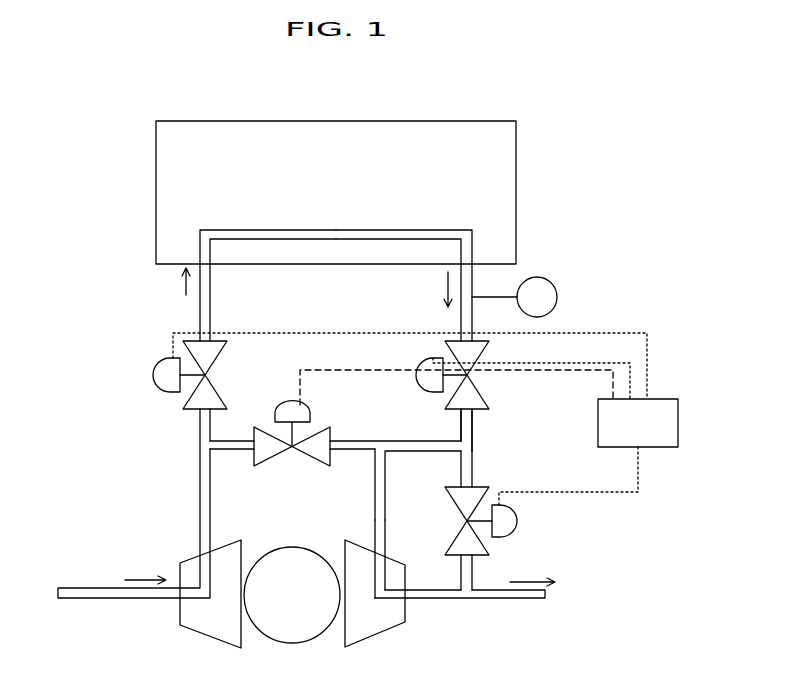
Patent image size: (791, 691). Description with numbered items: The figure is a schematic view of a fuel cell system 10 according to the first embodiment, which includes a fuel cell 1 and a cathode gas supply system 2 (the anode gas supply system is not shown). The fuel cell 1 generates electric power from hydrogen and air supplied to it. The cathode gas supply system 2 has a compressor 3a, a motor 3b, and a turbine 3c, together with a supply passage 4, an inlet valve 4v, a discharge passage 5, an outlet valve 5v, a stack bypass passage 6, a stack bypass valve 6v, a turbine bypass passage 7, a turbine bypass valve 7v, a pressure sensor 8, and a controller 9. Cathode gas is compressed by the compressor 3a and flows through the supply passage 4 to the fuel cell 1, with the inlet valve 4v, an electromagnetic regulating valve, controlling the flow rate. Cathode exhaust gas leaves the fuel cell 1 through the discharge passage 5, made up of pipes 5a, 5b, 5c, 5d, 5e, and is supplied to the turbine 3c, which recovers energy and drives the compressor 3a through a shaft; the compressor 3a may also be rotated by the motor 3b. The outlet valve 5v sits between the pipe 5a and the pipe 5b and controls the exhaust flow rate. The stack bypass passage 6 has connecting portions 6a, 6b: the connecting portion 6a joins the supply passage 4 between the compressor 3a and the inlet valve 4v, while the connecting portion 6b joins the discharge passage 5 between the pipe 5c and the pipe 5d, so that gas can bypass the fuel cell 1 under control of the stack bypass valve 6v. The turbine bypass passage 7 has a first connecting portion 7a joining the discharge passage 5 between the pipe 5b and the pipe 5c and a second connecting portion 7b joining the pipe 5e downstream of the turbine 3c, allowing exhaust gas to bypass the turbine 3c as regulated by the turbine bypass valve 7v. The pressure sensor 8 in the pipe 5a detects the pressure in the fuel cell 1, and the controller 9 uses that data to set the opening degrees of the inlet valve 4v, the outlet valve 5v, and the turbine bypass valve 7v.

The fuel cell system 10 is at (124, 153).
The fuel cell 1 is at (518, 200).
The cathode gas supply system 2 is at (100, 325).
The compressor 3a is at (188, 632).
The motor 3b is at (292, 547).
The turbine 3c is at (393, 628).
The supply passage 4 is at (197, 507).
The inlet valve 4v is at (158, 371).
The discharge passage 5 is at (474, 431).
The pipe 5a is at (467, 318).
The pipe 5b is at (462, 421).
The pipe 5c is at (425, 443).
The pipe 5d is at (386, 521).
The pipe 5e is at (517, 600).
The outlet valve 5v is at (489, 402).
The stack bypass passage 6 is at (346, 436).
The connecting portion 6a is at (213, 453).
The connecting portion 6b is at (372, 452).
The stack bypass valve 6v is at (283, 401).
The turbine bypass passage 7 is at (474, 477).
The first connecting portion 7a is at (460, 455).
The second connecting portion 7b is at (461, 586).
The turbine bypass valve 7v is at (516, 523).
The pressure sensor 8 is at (558, 298).
The controller 9 is at (668, 448).